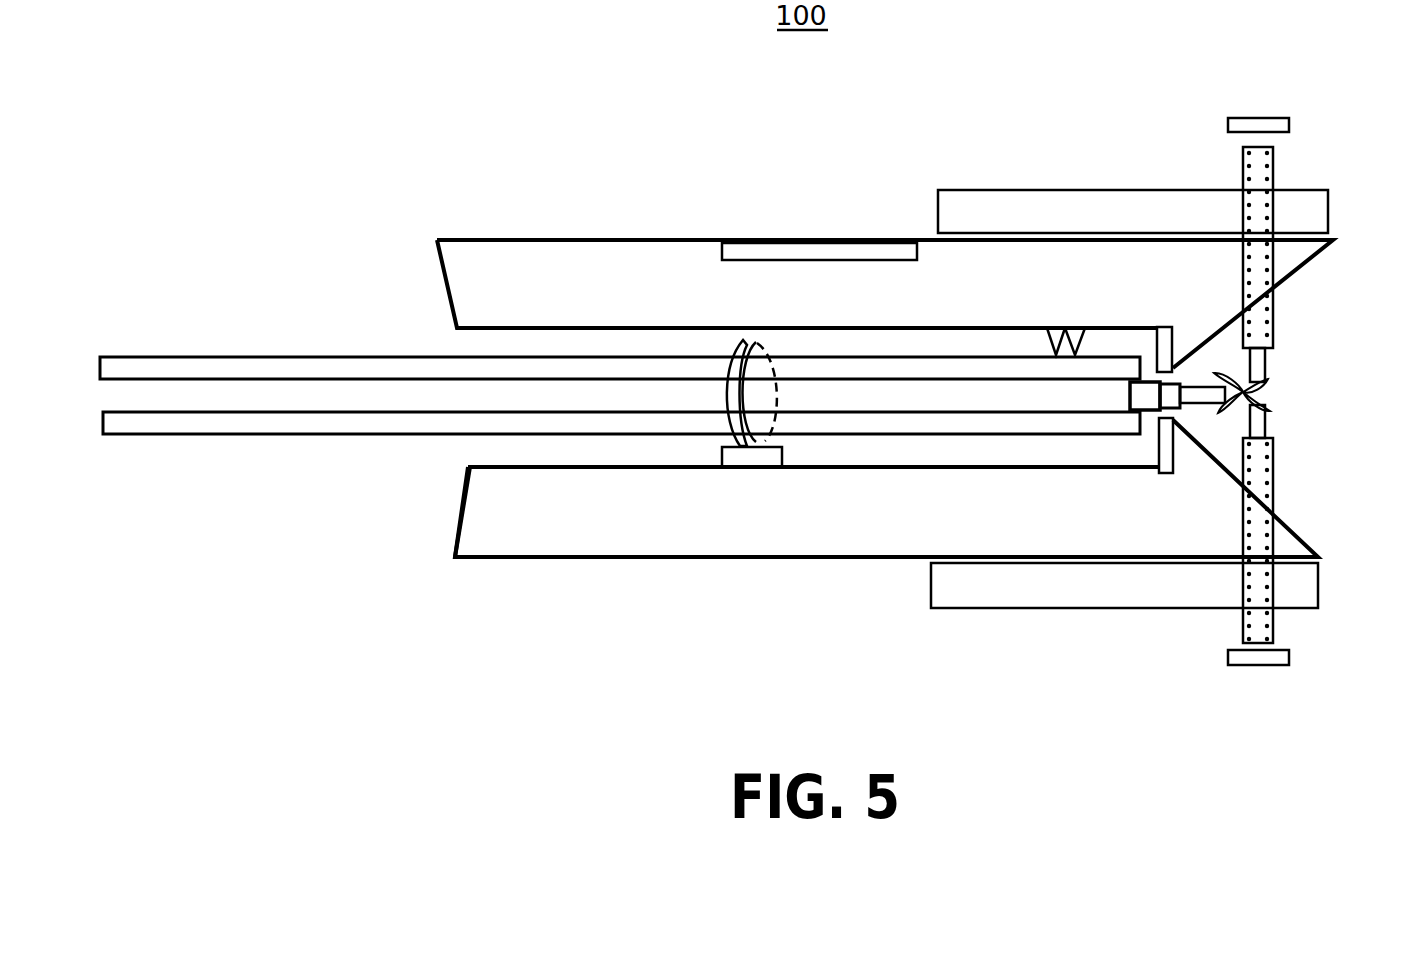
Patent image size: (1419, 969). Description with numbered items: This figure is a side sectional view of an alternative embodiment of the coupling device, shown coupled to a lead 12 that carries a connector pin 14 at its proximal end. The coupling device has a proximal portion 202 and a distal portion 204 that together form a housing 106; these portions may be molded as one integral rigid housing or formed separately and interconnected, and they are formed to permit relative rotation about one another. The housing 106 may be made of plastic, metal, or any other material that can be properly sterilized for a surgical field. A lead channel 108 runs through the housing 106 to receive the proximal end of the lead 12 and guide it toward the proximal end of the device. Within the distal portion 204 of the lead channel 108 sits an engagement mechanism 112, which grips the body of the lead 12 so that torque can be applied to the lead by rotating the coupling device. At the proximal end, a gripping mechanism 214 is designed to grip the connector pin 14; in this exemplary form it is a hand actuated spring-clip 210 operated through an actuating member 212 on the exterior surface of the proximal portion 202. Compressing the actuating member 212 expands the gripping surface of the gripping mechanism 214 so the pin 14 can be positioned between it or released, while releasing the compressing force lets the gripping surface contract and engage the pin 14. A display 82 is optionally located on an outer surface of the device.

The lead 12 is at (350, 452).
The connector pin 14 is at (1200, 403).
The display 82 is at (840, 242).
The housing 106 is at (845, 578).
The lead channel 108 is at (474, 343).
The engagement mechanism 112 is at (716, 346).
The proximal portion 202 is at (1042, 607).
The distal portion 204 is at (538, 562).
The spring-clip 210 is at (1268, 139).
The actuating member 212 is at (1233, 115).
The gripping mechanism 214 is at (1258, 392).